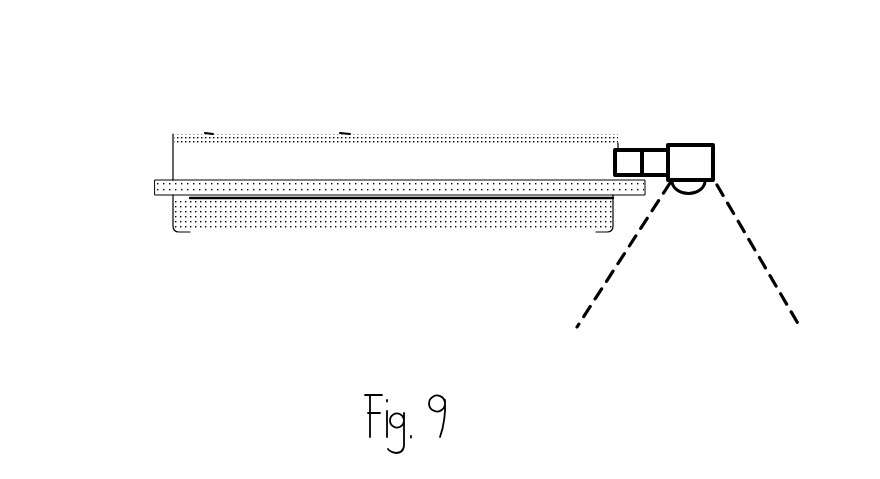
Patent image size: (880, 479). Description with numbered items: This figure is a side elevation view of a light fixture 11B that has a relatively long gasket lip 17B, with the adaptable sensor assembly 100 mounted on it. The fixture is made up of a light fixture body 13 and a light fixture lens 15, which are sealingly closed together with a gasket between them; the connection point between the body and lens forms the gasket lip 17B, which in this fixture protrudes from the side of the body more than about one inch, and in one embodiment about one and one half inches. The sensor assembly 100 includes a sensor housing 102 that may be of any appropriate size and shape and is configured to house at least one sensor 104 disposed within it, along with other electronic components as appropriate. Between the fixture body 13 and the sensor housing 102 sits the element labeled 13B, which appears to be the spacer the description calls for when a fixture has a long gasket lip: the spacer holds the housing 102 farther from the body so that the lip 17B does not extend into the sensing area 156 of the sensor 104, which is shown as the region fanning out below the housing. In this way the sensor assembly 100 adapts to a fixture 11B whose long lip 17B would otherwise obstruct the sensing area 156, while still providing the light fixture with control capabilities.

The light fixture 11B is at (353, 159).
The light fixture body 13 is at (467, 160).
The sensor module housing 13B is at (632, 160).
The light fixture lens 15 is at (333, 222).
The gasket lip 17B is at (153, 187).
The adaptable sensor assembly 100 is at (706, 131).
The sensor housing 102 is at (702, 160).
The sensor 104 is at (716, 198).
The sensing area 156 is at (702, 298).